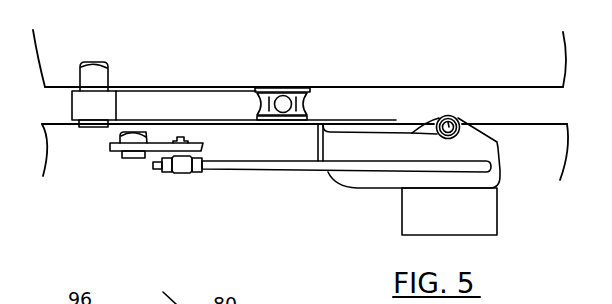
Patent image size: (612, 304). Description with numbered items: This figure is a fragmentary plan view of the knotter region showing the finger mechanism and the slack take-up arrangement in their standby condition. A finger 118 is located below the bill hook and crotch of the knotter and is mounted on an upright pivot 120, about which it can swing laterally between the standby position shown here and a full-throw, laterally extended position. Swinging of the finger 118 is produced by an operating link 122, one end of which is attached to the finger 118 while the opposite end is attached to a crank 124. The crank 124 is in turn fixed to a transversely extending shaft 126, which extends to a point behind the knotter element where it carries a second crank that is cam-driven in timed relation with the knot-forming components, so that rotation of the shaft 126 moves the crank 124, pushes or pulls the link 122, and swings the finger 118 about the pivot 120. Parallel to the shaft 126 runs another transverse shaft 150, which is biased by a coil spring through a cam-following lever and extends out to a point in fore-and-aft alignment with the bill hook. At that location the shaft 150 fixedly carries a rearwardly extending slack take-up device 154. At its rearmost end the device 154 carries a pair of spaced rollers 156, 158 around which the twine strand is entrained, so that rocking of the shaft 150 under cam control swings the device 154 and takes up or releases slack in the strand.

The finger 118 is at (377, 181).
The upright pivot 120 is at (457, 117).
The operating link 122 is at (292, 171).
The crank 124 is at (205, 146).
The transversely extending shaft 126 is at (118, 138).
The transverse shaft 150 is at (87, 72).
The slack take-up device 154 is at (159, 78).
The roller 156 is at (311, 103).
The roller 158 is at (248, 89).